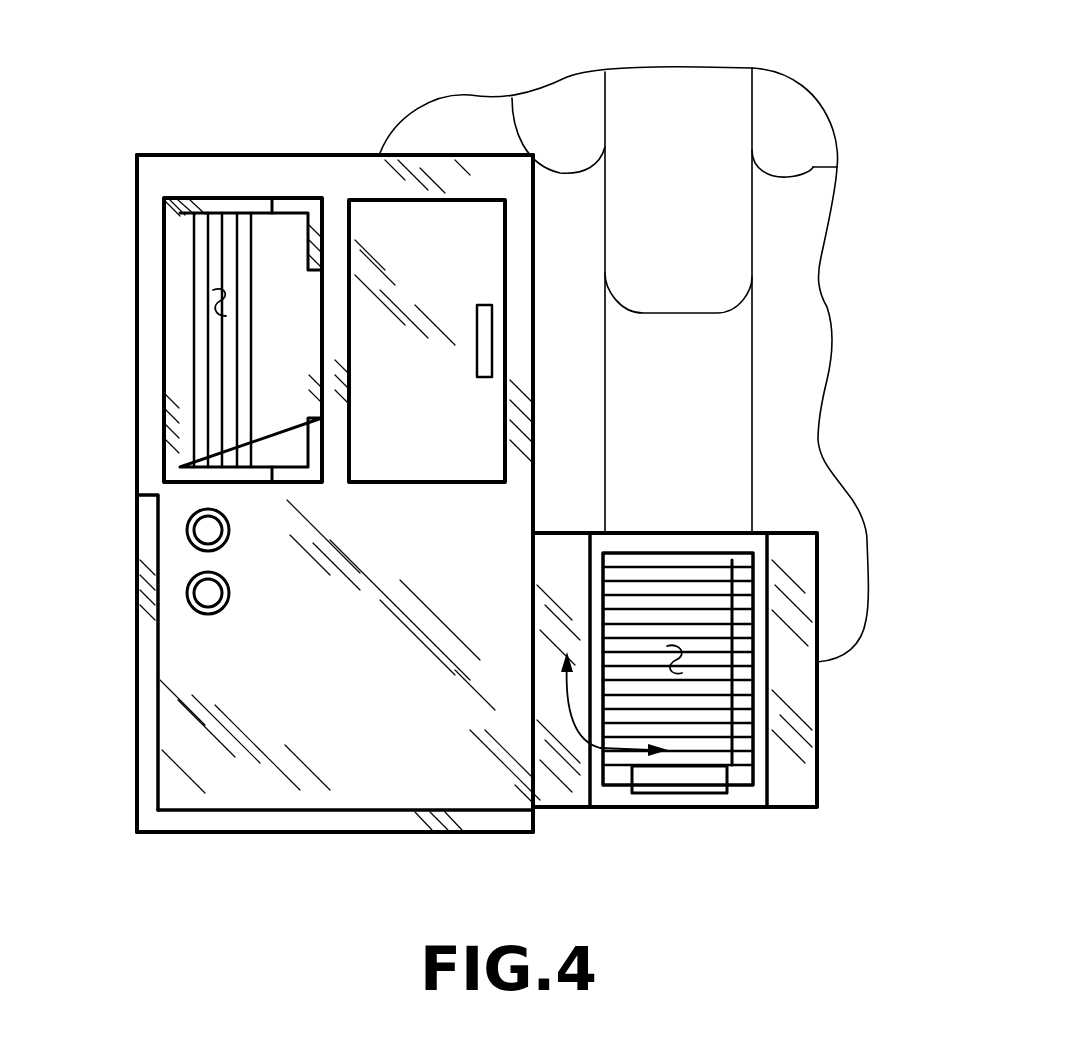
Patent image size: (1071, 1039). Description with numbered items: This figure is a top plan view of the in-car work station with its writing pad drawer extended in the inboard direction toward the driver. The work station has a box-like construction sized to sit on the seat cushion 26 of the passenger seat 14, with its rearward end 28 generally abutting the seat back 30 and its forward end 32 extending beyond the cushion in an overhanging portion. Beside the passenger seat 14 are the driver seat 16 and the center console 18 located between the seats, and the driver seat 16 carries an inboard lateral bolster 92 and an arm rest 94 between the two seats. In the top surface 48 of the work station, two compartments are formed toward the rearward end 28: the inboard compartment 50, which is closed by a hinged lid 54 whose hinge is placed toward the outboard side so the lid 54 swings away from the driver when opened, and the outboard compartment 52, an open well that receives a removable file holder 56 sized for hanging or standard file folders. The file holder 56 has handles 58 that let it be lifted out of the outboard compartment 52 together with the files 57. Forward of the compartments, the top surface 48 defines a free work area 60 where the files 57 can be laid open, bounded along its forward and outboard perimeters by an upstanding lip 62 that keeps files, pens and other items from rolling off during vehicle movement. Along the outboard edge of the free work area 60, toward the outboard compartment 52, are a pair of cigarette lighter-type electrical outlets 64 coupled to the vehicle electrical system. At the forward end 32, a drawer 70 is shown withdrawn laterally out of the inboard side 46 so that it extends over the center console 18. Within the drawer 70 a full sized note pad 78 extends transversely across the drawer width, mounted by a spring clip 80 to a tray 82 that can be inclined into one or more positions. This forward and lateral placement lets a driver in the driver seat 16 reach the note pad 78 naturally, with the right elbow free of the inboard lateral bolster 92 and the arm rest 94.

The passenger seat 14 is at (476, 128).
The driver seat 16 is at (800, 343).
The center console 18 is at (683, 403).
The seat cushion 26 is at (562, 260).
The rearward end 28 is at (155, 155).
The seat back 30 is at (447, 137).
The forward end 32 is at (205, 833).
The inboard side 46 is at (540, 783).
The top surface 48 is at (184, 760).
The inboard compartment 50 is at (388, 240).
The outboard compartment 52 is at (280, 330).
The hinged lid 54 is at (410, 216).
The file holder 56 is at (207, 198).
The files 57 is at (215, 295).
The handles 58 is at (242, 198).
The free work area 60 is at (316, 658).
The upstanding lip 62 is at (148, 688).
The electrical outlets 64 is at (208, 530).
The drawer 70 is at (805, 550).
The note pad 78 is at (682, 673).
The spring clip 80 is at (717, 780).
The tray 82 is at (760, 627).
The inboard lateral bolster 92 is at (783, 118).
The arm rest 94 is at (664, 140).